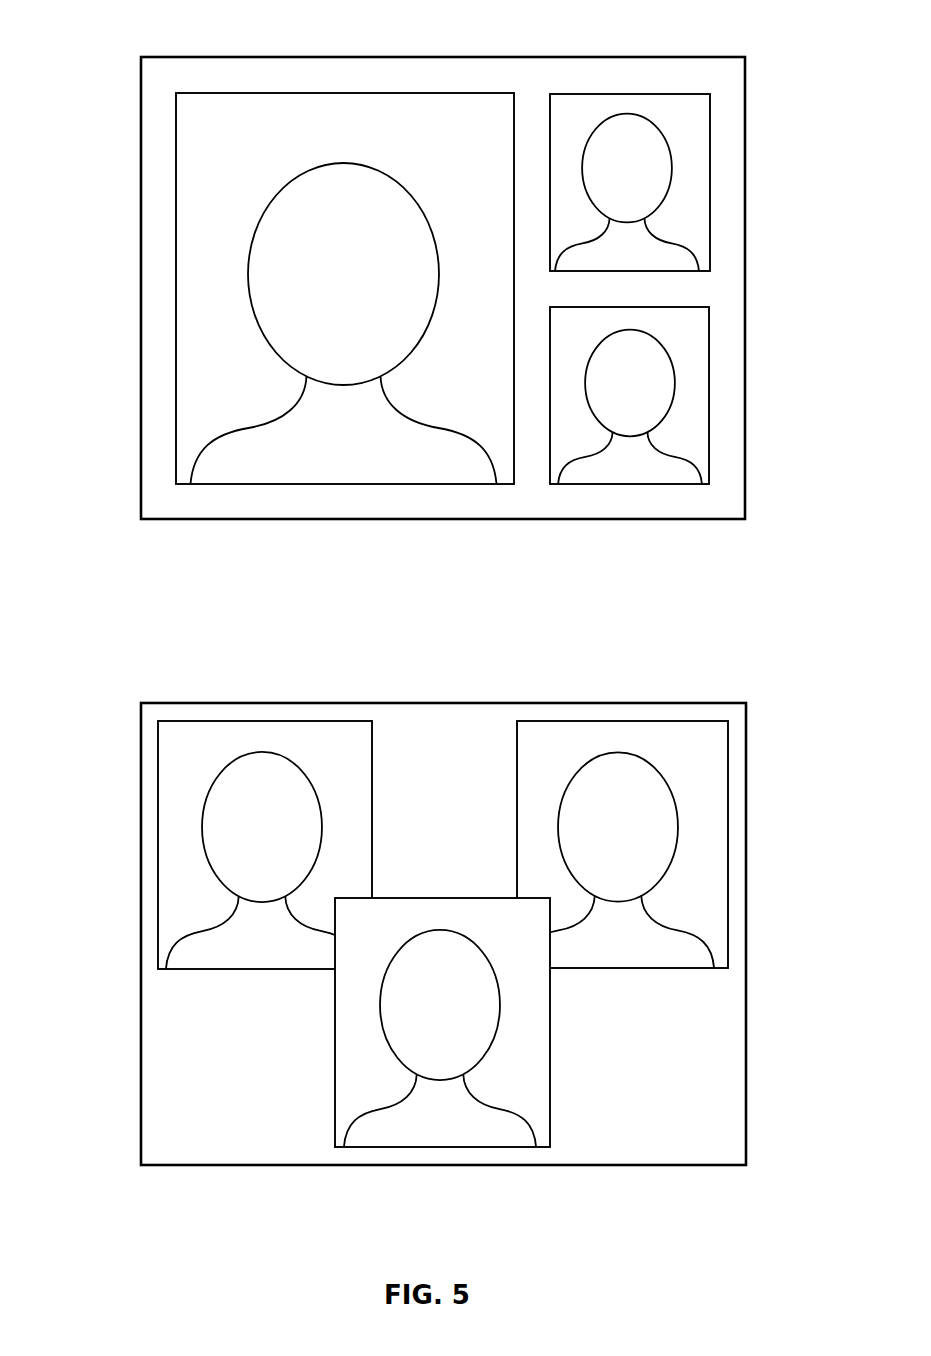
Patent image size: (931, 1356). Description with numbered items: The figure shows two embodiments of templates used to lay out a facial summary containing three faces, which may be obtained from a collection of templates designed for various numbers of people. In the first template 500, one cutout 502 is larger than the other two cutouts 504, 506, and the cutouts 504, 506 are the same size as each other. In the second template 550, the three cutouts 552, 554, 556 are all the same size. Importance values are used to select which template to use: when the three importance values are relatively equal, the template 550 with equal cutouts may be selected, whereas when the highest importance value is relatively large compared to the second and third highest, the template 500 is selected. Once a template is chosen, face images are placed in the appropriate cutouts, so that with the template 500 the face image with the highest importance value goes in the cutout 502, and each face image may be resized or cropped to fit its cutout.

The template 500 is at (445, 37).
The cutout 502 is at (176, 289).
The cutout 504 is at (710, 180).
The cutout 506 is at (710, 396).
The template 550 is at (453, 673).
The cutout 552 is at (158, 845).
The cutout 554 is at (442, 1147).
The cutout 556 is at (730, 844).